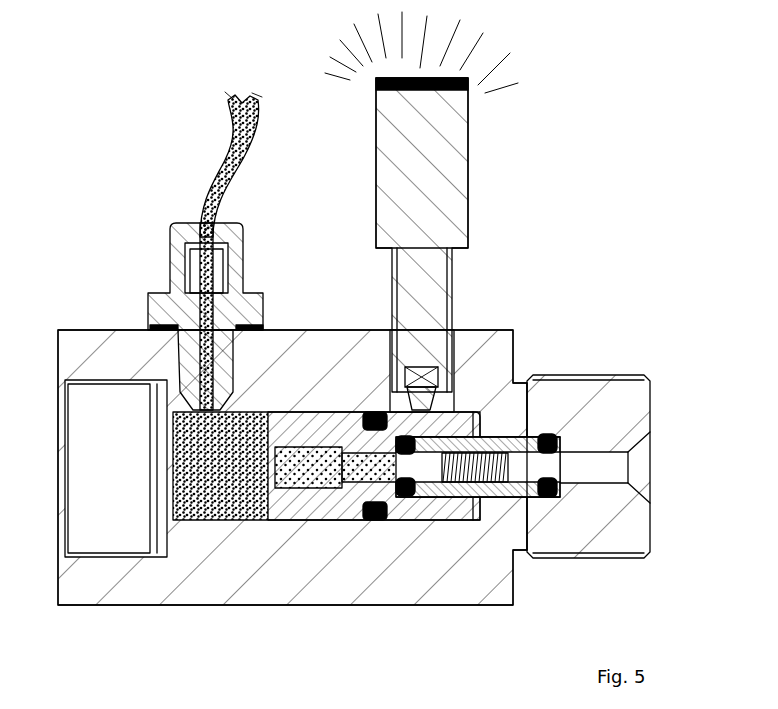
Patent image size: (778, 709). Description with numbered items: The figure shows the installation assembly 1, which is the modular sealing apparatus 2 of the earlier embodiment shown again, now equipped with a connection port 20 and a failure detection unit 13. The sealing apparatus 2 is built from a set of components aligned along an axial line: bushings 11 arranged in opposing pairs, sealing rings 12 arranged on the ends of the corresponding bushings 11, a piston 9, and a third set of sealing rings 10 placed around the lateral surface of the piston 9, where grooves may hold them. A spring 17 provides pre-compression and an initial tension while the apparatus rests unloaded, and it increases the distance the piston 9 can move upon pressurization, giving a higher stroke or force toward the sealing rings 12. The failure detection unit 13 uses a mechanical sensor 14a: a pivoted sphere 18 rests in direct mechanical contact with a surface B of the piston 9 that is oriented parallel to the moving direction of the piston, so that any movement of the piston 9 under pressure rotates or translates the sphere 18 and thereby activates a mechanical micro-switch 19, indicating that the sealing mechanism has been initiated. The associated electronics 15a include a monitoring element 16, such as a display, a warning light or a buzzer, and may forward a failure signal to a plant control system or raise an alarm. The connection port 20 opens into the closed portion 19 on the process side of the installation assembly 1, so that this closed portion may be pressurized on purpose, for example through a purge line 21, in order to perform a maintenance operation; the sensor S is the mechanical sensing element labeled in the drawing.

The installation assembly 1 is at (163, 165).
The modular sealing apparatus 2 is at (277, 540).
The piston 9 is at (325, 427).
The third set of sealing rings 10 is at (375, 510).
The bushings 11 is at (540, 493).
The sealing rings 12 is at (408, 497).
The failure detection unit 13 is at (350, 207).
The mechanical sensor 14a is at (430, 358).
The electronics 15a is at (530, 125).
The monitoring element 16 is at (443, 70).
The spring 17 is at (475, 495).
The pivoted sphere 18 is at (437, 409).
The micro-switch 19 is at (222, 497).
The connection port 20 is at (185, 408).
The purge line 21 is at (203, 201).
The sensor S is at (403, 408).
The surface of the piston B is at (445, 406).